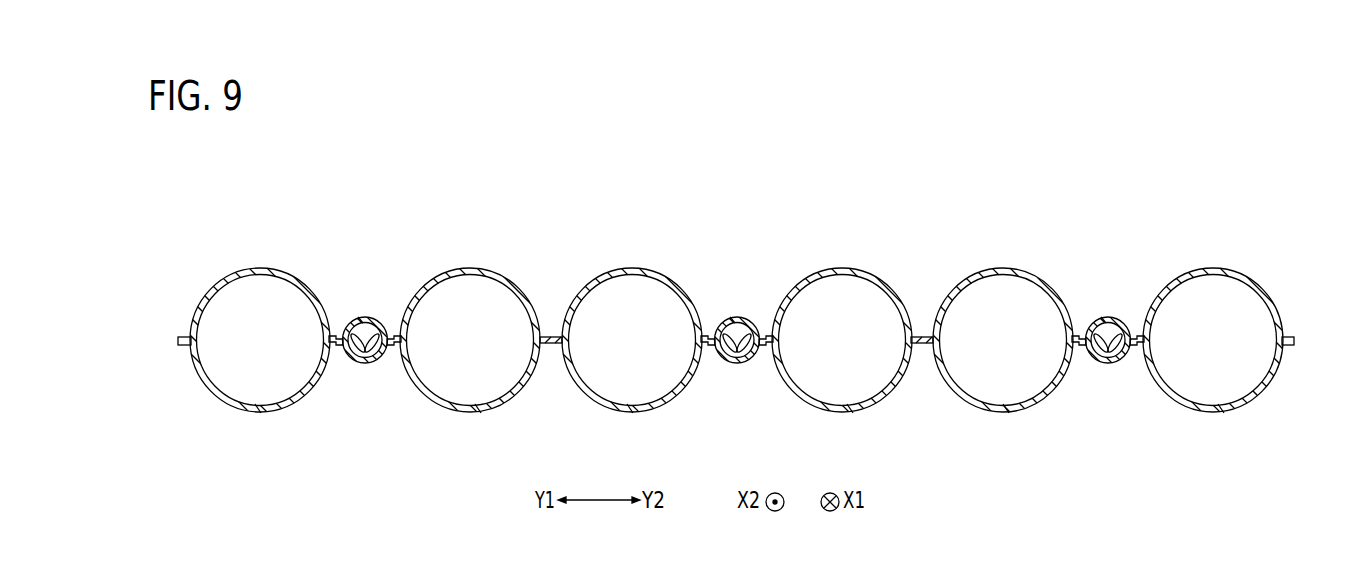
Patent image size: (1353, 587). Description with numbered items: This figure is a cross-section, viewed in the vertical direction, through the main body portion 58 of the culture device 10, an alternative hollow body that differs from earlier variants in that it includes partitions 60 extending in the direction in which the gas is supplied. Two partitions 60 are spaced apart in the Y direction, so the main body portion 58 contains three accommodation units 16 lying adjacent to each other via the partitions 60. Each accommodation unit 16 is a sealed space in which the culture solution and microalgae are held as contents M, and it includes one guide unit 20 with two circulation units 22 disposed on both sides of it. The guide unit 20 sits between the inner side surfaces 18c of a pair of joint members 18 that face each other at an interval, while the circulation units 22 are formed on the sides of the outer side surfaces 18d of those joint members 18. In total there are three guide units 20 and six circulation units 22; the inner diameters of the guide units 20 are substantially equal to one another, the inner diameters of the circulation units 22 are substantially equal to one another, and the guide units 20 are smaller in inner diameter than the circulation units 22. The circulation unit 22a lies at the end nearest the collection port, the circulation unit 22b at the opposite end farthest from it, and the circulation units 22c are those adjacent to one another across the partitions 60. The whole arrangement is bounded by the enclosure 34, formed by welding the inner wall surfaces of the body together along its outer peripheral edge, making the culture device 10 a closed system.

The culture device 10 is at (343, 144).
The main body portion 58 is at (743, 320).
The accommodation unit 16 is at (510, 216).
The circulation unit 22 is at (245, 300).
The circulation unit 22a is at (260, 333).
The circulation unit 22b is at (1213, 333).
The circulation unit 22c is at (736, 333).
The guide unit 20 is at (365, 330).
The joint member 18 is at (338, 347).
The inner side surface 18c is at (369, 362).
The outer side surface 18d is at (336, 338).
The enclosure 34 is at (186, 334).
The partition 60 is at (552, 348).
The contents M is at (360, 326).